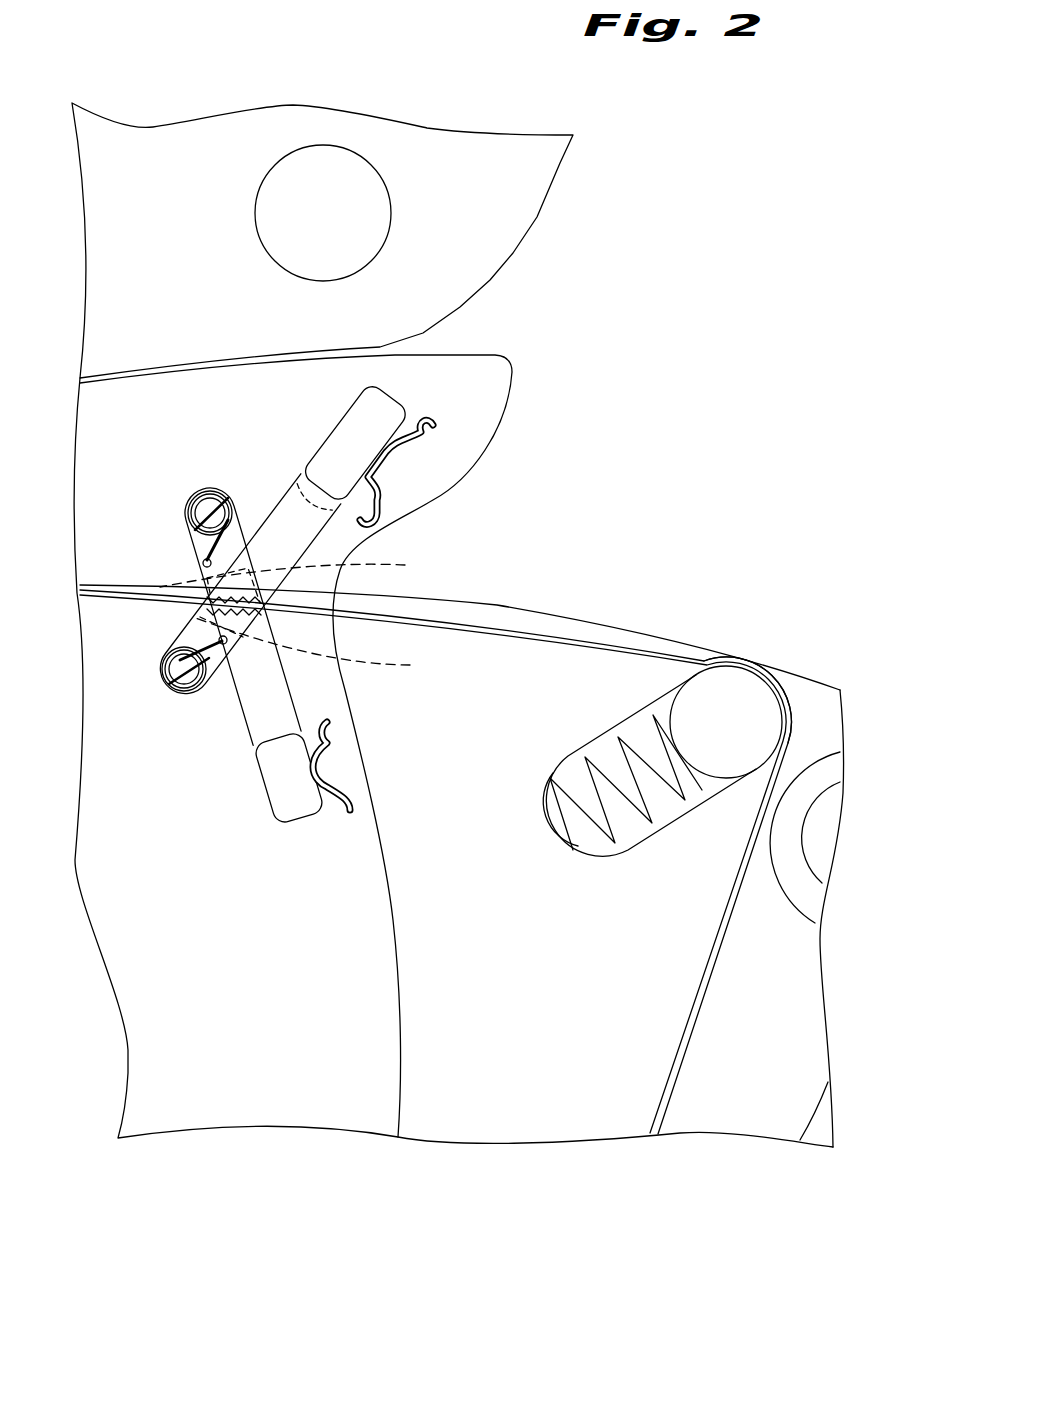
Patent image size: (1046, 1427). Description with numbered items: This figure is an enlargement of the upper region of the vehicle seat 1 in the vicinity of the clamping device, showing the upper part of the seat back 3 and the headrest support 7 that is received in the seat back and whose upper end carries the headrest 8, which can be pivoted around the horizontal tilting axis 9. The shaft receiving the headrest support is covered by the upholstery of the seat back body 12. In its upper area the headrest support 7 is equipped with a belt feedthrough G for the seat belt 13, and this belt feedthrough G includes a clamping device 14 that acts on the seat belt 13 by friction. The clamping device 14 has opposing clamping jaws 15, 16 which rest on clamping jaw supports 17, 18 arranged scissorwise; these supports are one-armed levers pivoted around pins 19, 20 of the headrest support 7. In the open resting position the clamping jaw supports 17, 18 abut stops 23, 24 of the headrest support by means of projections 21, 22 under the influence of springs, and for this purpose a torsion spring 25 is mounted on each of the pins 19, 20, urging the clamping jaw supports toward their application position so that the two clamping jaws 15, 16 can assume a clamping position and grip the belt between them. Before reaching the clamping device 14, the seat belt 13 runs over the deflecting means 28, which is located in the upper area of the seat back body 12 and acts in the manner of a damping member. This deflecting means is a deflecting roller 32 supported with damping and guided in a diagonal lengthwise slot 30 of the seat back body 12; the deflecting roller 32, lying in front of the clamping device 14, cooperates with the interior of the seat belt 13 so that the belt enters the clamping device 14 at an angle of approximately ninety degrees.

The vehicle seat 1 is at (680, 358).
The seat back 3 is at (573, 607).
The headrest support 7 is at (400, 1005).
The headrest 8 is at (545, 162).
The horizontal tilting axis 9 is at (331, 197).
The seat back body 12 is at (767, 1118).
The seat belt 13 is at (691, 1013).
The clamping device 14 is at (160, 573).
The clamping jaw 15 is at (299, 568).
The clamping jaw 16 is at (327, 650).
The clamping jaw support 17 is at (233, 705).
The clamping jaw support 18 is at (381, 496).
The pin 19 is at (192, 508).
The pin 20 is at (170, 683).
The projection 21 is at (283, 810).
The projection 22 is at (393, 400).
The stop 23 is at (350, 802).
The stop 24 is at (433, 428).
The torsion spring 25 is at (233, 497).
The deflecting means 28 is at (740, 700).
The diagonal slot 30 is at (685, 808).
The deflecting roller 32 is at (757, 707).
The belt feedthrough G is at (507, 620).